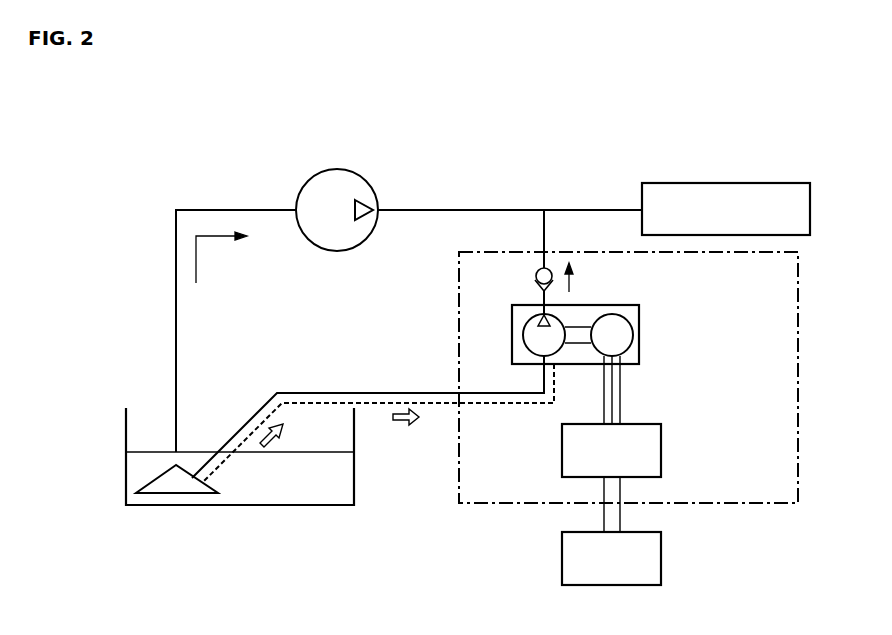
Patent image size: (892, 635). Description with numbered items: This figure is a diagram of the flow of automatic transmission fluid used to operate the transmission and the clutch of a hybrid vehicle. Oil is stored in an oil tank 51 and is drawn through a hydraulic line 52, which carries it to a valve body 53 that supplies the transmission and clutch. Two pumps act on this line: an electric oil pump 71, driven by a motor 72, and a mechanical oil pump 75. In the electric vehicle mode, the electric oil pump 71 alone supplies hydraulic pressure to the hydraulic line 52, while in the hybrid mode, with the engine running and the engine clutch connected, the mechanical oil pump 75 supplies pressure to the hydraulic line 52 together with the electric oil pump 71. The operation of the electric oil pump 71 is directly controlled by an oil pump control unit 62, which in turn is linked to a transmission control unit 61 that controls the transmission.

The oil tank 51 is at (101, 409).
The hydraulic line 52 is at (221, 349).
The valve body 53 is at (722, 154).
The transmission control unit 61 is at (518, 555).
The oil pump control unit 62 is at (693, 429).
The electric oil pump 71 is at (683, 342).
The motor 72 is at (665, 315).
The mechanical oil pump 75 is at (283, 157).